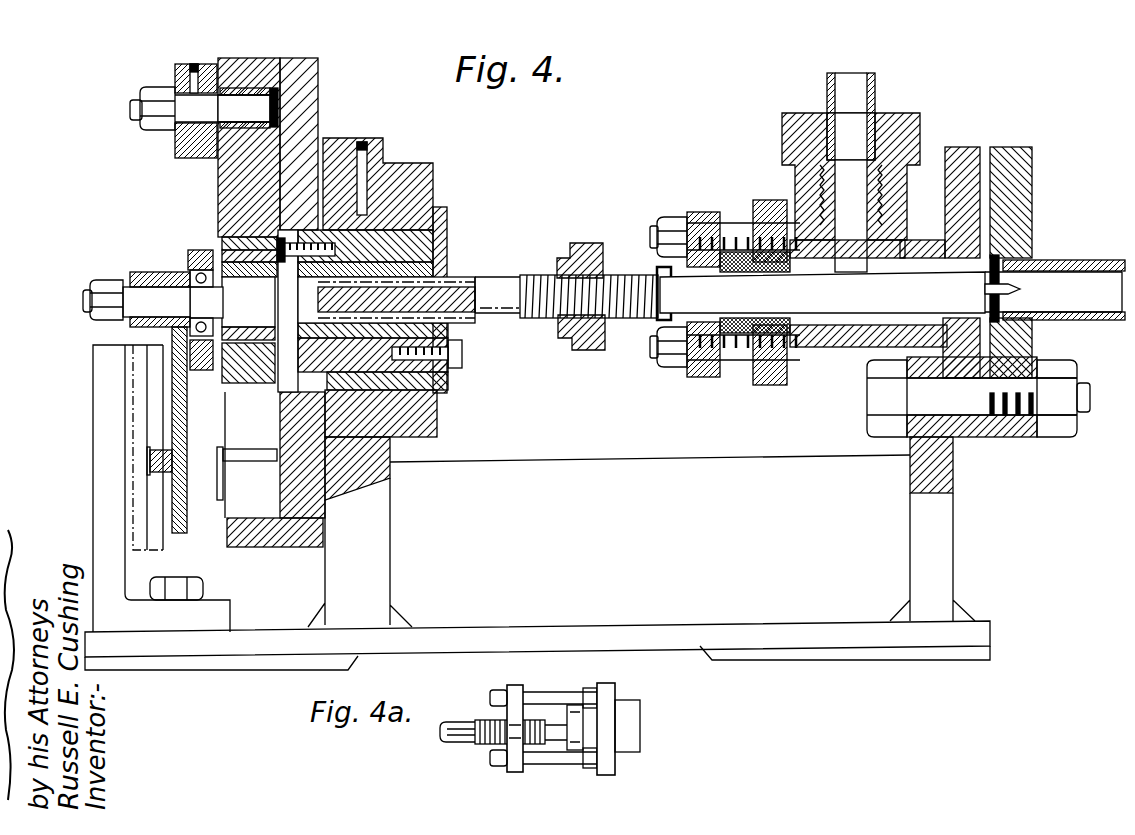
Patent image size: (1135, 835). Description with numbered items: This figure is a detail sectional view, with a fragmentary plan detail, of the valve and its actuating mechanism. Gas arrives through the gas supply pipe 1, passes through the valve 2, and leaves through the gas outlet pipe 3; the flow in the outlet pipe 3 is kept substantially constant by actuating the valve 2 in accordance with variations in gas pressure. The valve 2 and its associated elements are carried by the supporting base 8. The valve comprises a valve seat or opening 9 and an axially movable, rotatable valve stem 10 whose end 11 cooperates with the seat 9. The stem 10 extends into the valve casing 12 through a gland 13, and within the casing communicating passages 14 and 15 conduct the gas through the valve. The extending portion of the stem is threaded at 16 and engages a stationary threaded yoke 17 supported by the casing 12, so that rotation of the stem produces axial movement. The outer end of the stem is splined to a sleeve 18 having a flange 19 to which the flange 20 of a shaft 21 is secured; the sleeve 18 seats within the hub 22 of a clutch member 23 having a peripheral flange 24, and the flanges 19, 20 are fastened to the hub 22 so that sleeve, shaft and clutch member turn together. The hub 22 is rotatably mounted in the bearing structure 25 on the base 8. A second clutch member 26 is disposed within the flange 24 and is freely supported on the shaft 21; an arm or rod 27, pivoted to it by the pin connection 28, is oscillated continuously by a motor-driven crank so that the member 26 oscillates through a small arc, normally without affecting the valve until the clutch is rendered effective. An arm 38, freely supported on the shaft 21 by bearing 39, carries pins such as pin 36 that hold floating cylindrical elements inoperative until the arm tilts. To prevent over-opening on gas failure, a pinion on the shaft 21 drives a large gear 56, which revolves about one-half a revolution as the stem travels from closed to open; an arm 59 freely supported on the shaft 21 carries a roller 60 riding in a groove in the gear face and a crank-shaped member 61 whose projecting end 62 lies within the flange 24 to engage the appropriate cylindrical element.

In FIG. 4, the gas supply pipe 1 is at (1112, 262).
In FIG. 4, the valve 2 is at (822, 292).
In FIG. 4, the gas outlet pipe 3 is at (877, 103).
In FIG. 4, the supporting base 8 is at (592, 470).
In FIG. 4, the valve seat 9 is at (1010, 280).
In FIG. 4, the valve stem 10 is at (840, 290).
In FIG. 4, the end of valve stem 11 is at (985, 292).
In FIG. 4, the valve casing 12 is at (820, 350).
In FIG. 4A, the valve casing 12 is at (626, 766).
In FIG. 4, the gland 13 is at (745, 340).
In FIG. 4A, the gland 13 is at (598, 715).
In FIG. 4, the communicating passage 14 is at (848, 160).
In FIG. 4, the communicating passage 15 is at (922, 247).
In FIG. 4, the threaded portion 16 is at (600, 280).
In FIG. 4A, the threaded portion 16 is at (470, 745).
In FIG. 4, the stationary threaded yoke 17 is at (572, 250).
In FIG. 4A, the stationary threaded yoke 17 is at (515, 758).
In FIG. 4, the sleeve 18 is at (440, 268).
In FIG. 4, the flange of sleeve 19 is at (285, 248).
In FIG. 4, the flange of shaft 20 is at (287, 355).
In FIG. 4, the shaft 21 is at (163, 302).
In FIG. 4, the hub 22 is at (432, 200).
In FIG. 4, the clutch member 23 is at (312, 108).
In FIG. 4, the peripheral flange 24 is at (260, 68).
In FIG. 4, the bearing structure 25 is at (418, 160).
In FIG. 4, the clutch member 26 is at (220, 200).
In FIG. 4, the arm or rod 27 is at (192, 64).
In FIG. 4, the pin connection 28 is at (192, 110).
In FIG. 4, the pin 36 is at (217, 353).
In FIG. 4, the arm 38 is at (185, 258).
In FIG. 4, the bearing 39 is at (200, 255).
In FIG. 4, the large gear 56 is at (133, 392).
In FIG. 4, the arm 59 is at (187, 432).
In FIG. 4, the roller 60 is at (152, 453).
In FIG. 4, the crank-shaped member 61 is at (217, 468).
In FIG. 4, the projecting end 62 is at (248, 455).